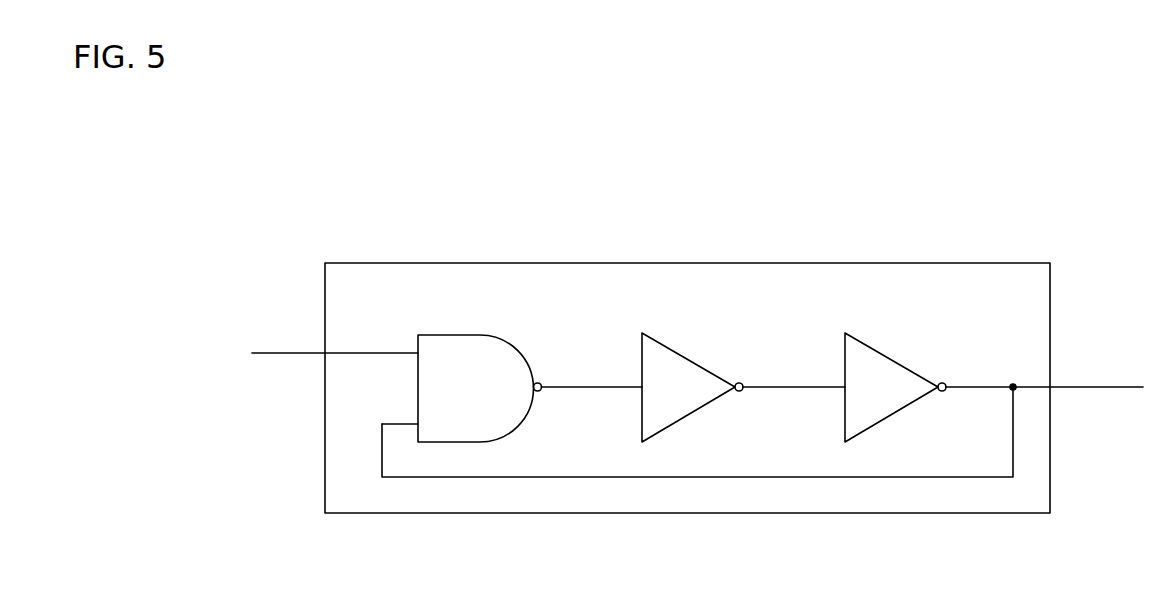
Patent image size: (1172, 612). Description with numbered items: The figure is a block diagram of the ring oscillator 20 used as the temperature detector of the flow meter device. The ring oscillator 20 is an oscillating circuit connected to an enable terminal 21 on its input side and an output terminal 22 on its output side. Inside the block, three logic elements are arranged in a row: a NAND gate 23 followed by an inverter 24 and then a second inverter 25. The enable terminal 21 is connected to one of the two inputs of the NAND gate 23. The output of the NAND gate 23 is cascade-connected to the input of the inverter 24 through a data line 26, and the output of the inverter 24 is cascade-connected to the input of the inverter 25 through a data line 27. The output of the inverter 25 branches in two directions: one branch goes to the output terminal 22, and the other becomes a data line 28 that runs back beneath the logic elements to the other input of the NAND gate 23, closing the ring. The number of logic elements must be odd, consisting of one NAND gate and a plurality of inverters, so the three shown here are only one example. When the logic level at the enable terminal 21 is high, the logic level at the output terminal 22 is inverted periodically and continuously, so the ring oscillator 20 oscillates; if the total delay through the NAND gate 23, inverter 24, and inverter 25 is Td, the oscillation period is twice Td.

The ring oscillator 20 is at (718, 514).
The enable terminal 21 is at (290, 353).
The output terminal 22 is at (1123, 387).
The NAND gate 23 is at (457, 335).
The inverter 24 is at (698, 365).
The inverter 25 is at (902, 363).
The data line 26 is at (603, 387).
The data line 27 is at (808, 387).
The data line 28 is at (939, 476).